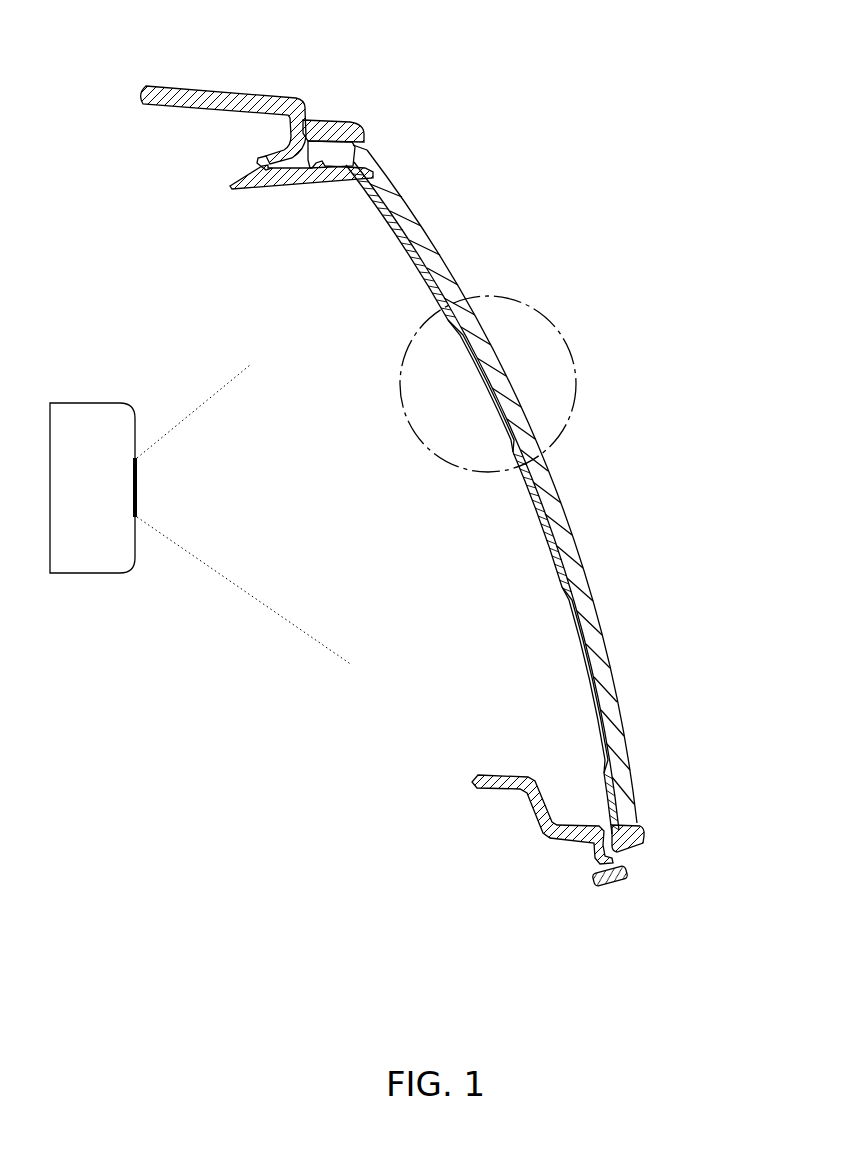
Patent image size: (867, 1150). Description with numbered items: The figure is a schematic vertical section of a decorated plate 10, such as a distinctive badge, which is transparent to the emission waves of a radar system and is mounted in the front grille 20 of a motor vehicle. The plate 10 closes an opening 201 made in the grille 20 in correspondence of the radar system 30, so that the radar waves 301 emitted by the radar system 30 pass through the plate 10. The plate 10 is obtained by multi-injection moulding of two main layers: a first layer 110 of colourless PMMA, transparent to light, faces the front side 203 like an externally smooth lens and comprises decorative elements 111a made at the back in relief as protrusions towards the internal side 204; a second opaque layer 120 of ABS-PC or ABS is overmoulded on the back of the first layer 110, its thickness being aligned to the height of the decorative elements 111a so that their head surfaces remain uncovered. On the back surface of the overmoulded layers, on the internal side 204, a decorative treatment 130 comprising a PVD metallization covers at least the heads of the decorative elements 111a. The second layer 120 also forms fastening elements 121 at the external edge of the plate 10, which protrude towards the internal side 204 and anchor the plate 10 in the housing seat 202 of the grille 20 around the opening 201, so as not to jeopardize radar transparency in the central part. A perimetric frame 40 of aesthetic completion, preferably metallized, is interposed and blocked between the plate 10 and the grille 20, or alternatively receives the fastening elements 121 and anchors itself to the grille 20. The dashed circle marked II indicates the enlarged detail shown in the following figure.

The decorated plate 10 is at (428, 175).
The first layer 110 is at (412, 215).
The decorative element 111a is at (540, 352).
The second layer 120 is at (427, 248).
The fastening element 121 is at (272, 175).
The decorative treatment 130 is at (427, 273).
The front grille 20 is at (228, 100).
The perimetric frame 40 is at (338, 128).
The housing seat 202 is at (303, 121).
The opening 201 is at (502, 723).
The front side 203 is at (680, 538).
The internal side 204 is at (433, 540).
The radar system 30 is at (78, 398).
The radar waves 301 is at (195, 415).
The section line II is at (576, 403).